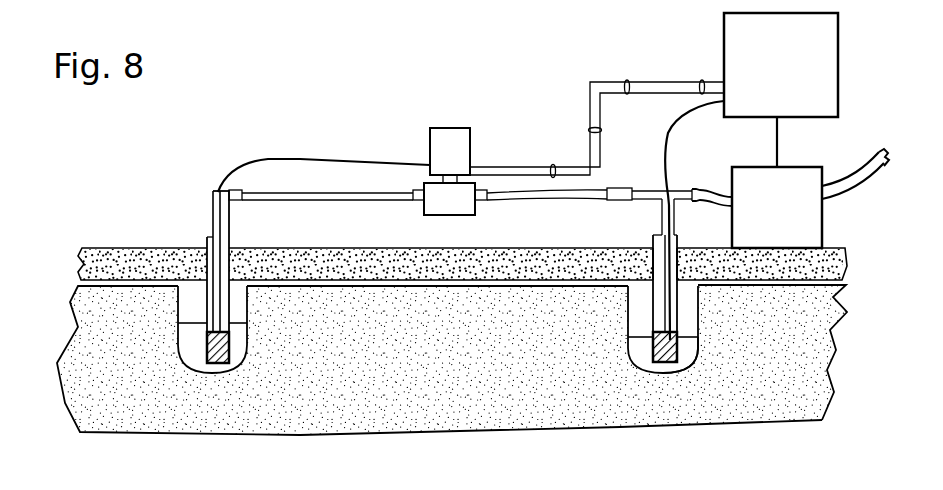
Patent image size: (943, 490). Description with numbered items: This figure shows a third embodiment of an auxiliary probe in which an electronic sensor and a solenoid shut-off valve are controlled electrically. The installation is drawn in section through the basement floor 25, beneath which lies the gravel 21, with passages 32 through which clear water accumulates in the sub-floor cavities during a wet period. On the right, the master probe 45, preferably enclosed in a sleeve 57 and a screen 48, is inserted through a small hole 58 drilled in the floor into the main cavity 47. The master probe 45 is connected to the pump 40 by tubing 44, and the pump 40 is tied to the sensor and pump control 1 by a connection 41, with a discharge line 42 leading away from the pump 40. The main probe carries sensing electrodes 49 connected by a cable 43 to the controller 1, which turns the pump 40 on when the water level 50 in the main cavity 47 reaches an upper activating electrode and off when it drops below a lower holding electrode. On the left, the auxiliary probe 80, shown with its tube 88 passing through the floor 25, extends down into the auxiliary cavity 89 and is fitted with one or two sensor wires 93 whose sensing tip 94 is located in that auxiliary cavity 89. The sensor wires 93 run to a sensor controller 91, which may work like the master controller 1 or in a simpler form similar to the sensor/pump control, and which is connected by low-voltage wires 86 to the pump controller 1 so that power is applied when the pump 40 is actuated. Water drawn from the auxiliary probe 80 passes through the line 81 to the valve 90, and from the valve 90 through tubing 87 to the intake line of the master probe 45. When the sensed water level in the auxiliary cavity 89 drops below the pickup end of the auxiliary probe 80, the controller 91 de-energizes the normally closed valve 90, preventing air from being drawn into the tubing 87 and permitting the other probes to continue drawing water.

The pump controller 1 is at (724, 40).
The gravel 21 is at (75, 321).
The basement floor 25 is at (102, 248).
The passages 32 is at (848, 284).
The pump 40 is at (742, 168).
The control line 41 is at (777, 150).
The discharge hose 42 is at (863, 168).
The sensor wire 43 is at (667, 135).
The tubing 44 is at (712, 189).
The master probe 45 is at (650, 190).
The main cavity 47 is at (650, 366).
The screen 48 is at (662, 361).
The sensing electrodes 49 is at (668, 358).
The water level 50 is at (685, 339).
The sleeve 57 is at (653, 237).
The hole 58 is at (648, 248).
The auxiliary probe 80 is at (218, 190).
The line 81 is at (300, 199).
The wires 86 is at (530, 166).
The tubing 87 is at (568, 197).
The tube 88 is at (205, 248).
The auxiliary cavity 89 is at (203, 365).
The valve 90 is at (436, 211).
The sensor controller 91 is at (430, 148).
The sensor wires 93 is at (316, 158).
The sensing tip 94 is at (206, 348).